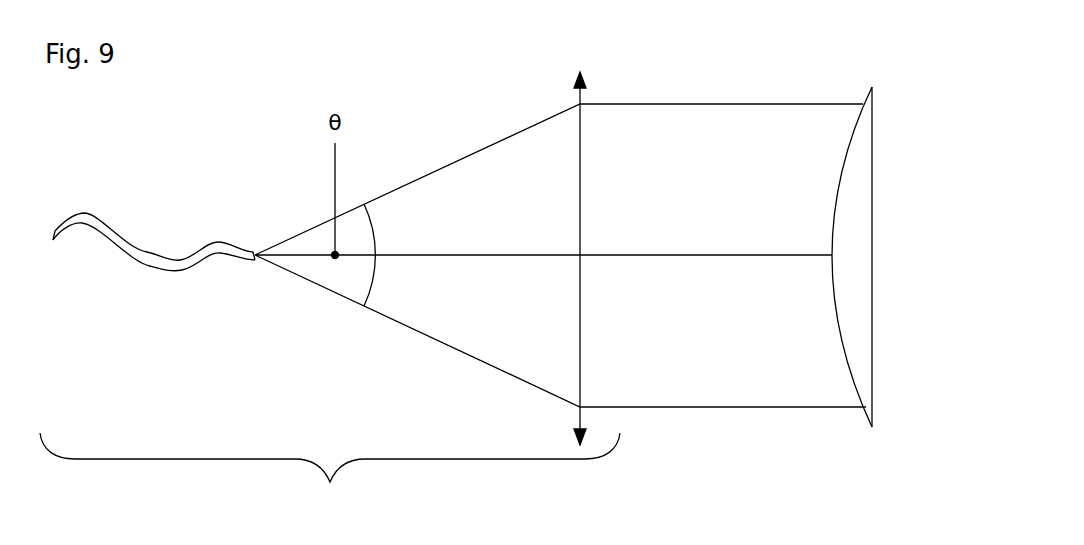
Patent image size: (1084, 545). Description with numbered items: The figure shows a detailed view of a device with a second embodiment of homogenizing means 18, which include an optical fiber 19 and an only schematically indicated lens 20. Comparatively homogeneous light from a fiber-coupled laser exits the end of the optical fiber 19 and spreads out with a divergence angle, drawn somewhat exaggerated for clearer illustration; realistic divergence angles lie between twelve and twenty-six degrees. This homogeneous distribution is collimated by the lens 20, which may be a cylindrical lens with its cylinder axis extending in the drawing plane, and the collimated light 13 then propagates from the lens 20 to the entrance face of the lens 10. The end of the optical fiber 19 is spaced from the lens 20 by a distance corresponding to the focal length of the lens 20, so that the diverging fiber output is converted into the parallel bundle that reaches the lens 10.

The lens 10 is at (863, 147).
The light beam 13 is at (695, 104).
The homogenizing means 18 is at (330, 474).
The optical fiber 19 is at (147, 255).
The lens 20 is at (578, 96).